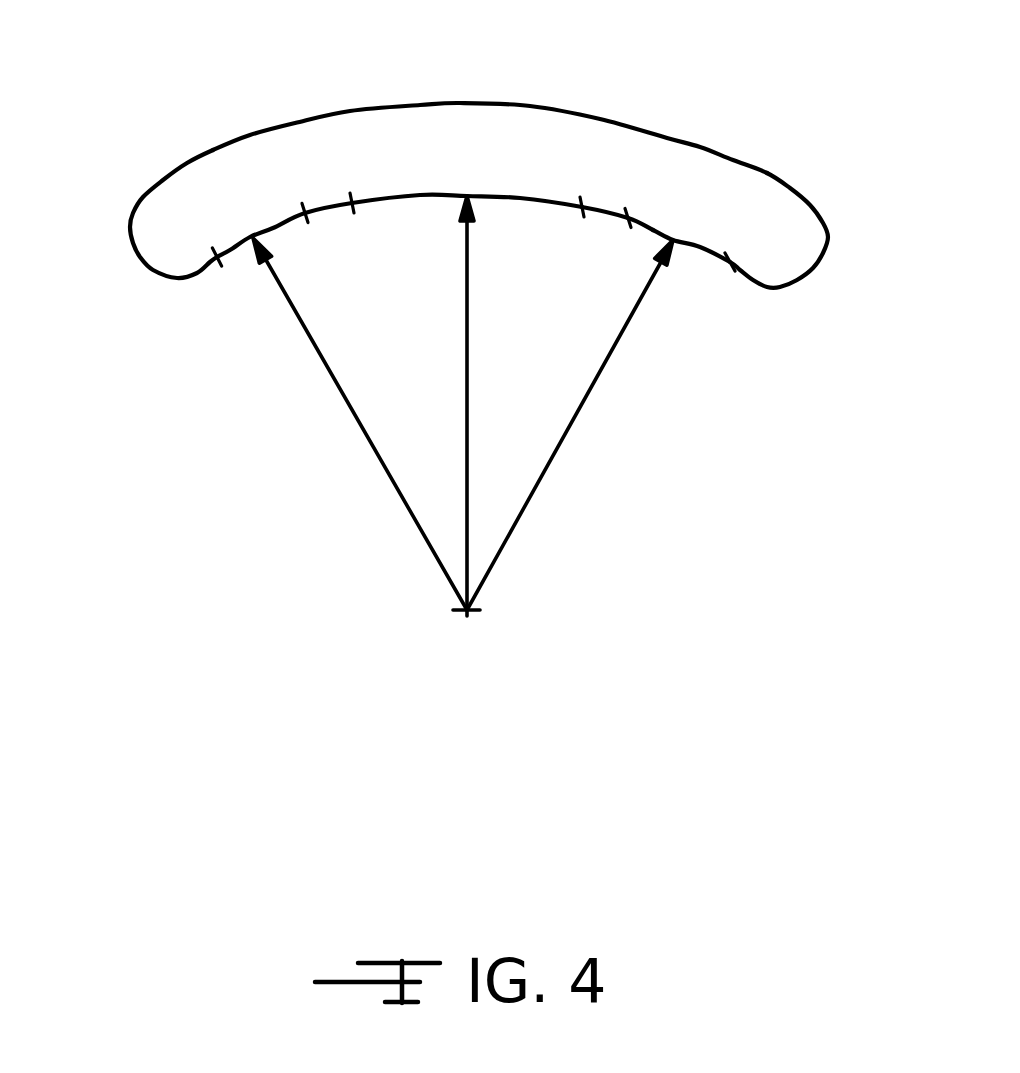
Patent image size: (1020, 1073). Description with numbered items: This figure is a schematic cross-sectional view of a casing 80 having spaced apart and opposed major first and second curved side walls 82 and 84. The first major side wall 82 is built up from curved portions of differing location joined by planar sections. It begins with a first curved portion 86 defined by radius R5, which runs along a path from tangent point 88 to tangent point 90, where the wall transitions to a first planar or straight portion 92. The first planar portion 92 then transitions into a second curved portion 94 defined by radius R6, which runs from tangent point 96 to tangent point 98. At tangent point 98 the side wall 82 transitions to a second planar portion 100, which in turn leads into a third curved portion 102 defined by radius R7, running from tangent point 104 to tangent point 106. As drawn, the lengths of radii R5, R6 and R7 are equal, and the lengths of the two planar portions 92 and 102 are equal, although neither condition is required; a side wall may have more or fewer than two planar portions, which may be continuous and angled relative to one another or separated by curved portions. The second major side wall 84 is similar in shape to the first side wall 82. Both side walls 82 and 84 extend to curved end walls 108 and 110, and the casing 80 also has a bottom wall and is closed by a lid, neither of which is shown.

The casing 80 is at (467, 203).
The first major side wall 82 is at (762, 290).
The second major side wall 84 is at (769, 173).
The first curved portion 86 is at (273, 228).
The tangent point 88 is at (218, 253).
The tangent point 90 is at (302, 212).
The first planar portion 92 is at (328, 205).
The second curved portion 94 is at (433, 200).
The tangent point 96 is at (355, 202).
The tangent point 98 is at (579, 203).
The second planar portion 100 is at (607, 208).
The third curved portion 102 is at (653, 230).
The tangent point 104 is at (637, 218).
The tangent point 106 is at (730, 258).
The curved end wall 108 is at (823, 260).
The curved end wall 110 is at (137, 250).
The radius R5 is at (316, 348).
The radius R6 is at (462, 300).
The radius R7 is at (592, 395).